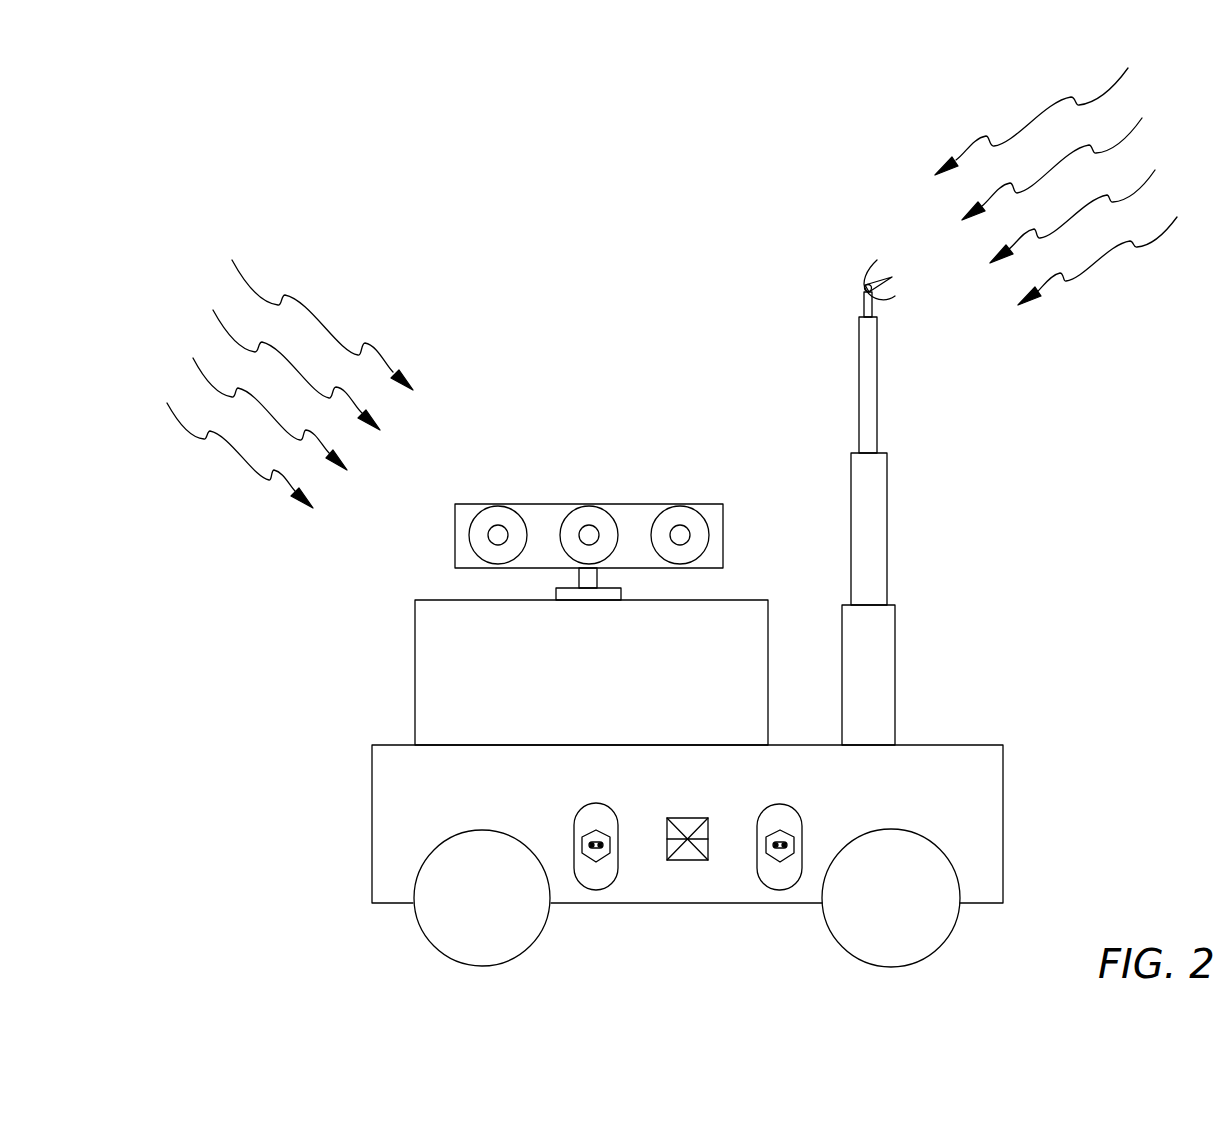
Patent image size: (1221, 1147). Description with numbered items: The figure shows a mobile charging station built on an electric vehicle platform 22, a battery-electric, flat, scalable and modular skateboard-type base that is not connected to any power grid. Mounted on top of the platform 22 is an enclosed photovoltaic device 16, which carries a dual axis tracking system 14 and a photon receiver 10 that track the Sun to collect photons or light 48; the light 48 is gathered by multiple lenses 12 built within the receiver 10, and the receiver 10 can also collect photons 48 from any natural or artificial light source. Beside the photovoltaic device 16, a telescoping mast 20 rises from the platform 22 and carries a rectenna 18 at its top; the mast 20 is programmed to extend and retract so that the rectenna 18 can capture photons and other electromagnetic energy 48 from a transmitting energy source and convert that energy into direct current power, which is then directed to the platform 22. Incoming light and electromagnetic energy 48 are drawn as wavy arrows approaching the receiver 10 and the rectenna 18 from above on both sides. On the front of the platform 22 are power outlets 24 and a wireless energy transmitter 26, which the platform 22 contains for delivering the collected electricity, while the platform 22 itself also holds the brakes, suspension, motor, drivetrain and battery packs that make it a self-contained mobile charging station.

The photon receiver 10 is at (554, 499).
The lenses 12 is at (590, 517).
The dual axis tracking system 14 is at (583, 575).
The enclosed photovoltaic device 16 is at (418, 648).
The rectenna 18 is at (895, 298).
The telescoping mast 20 is at (885, 637).
The electric vehicle platform 22 is at (393, 777).
The power outlets 24 is at (596, 862).
The wireless energy transmitter 26 is at (693, 861).
The photons or light 48 is at (322, 305).